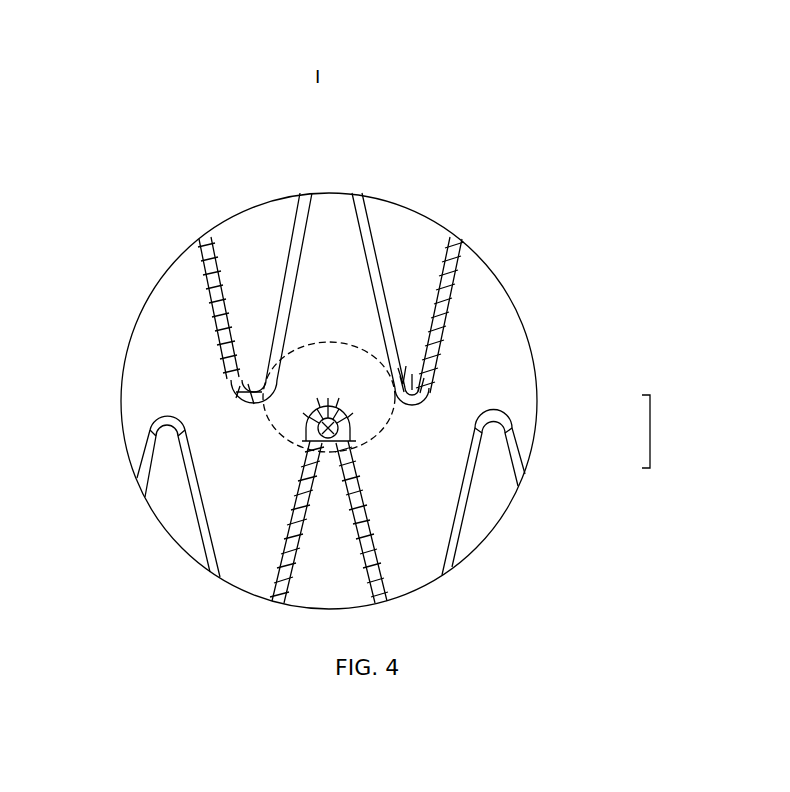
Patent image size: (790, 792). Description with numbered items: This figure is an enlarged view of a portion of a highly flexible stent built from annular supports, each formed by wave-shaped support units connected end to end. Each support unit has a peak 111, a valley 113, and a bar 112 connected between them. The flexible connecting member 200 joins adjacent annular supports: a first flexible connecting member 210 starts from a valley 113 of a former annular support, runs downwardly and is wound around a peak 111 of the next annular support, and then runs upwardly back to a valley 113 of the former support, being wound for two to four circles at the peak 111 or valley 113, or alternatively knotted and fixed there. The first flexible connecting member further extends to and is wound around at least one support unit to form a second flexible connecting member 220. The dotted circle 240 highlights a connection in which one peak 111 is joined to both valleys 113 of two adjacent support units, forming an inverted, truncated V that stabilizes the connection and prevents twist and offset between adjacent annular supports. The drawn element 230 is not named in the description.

The peak 111 is at (330, 415).
The bar 112 is at (385, 298).
The valley 113 is at (247, 392).
The dotted circle 240 is at (339, 340).
The flexible connecting member 200 is at (667, 431).
The first flexible connecting member 210 is at (378, 407).
The second flexible connecting member 220 is at (440, 367).
The screw 230 is at (450, 323).